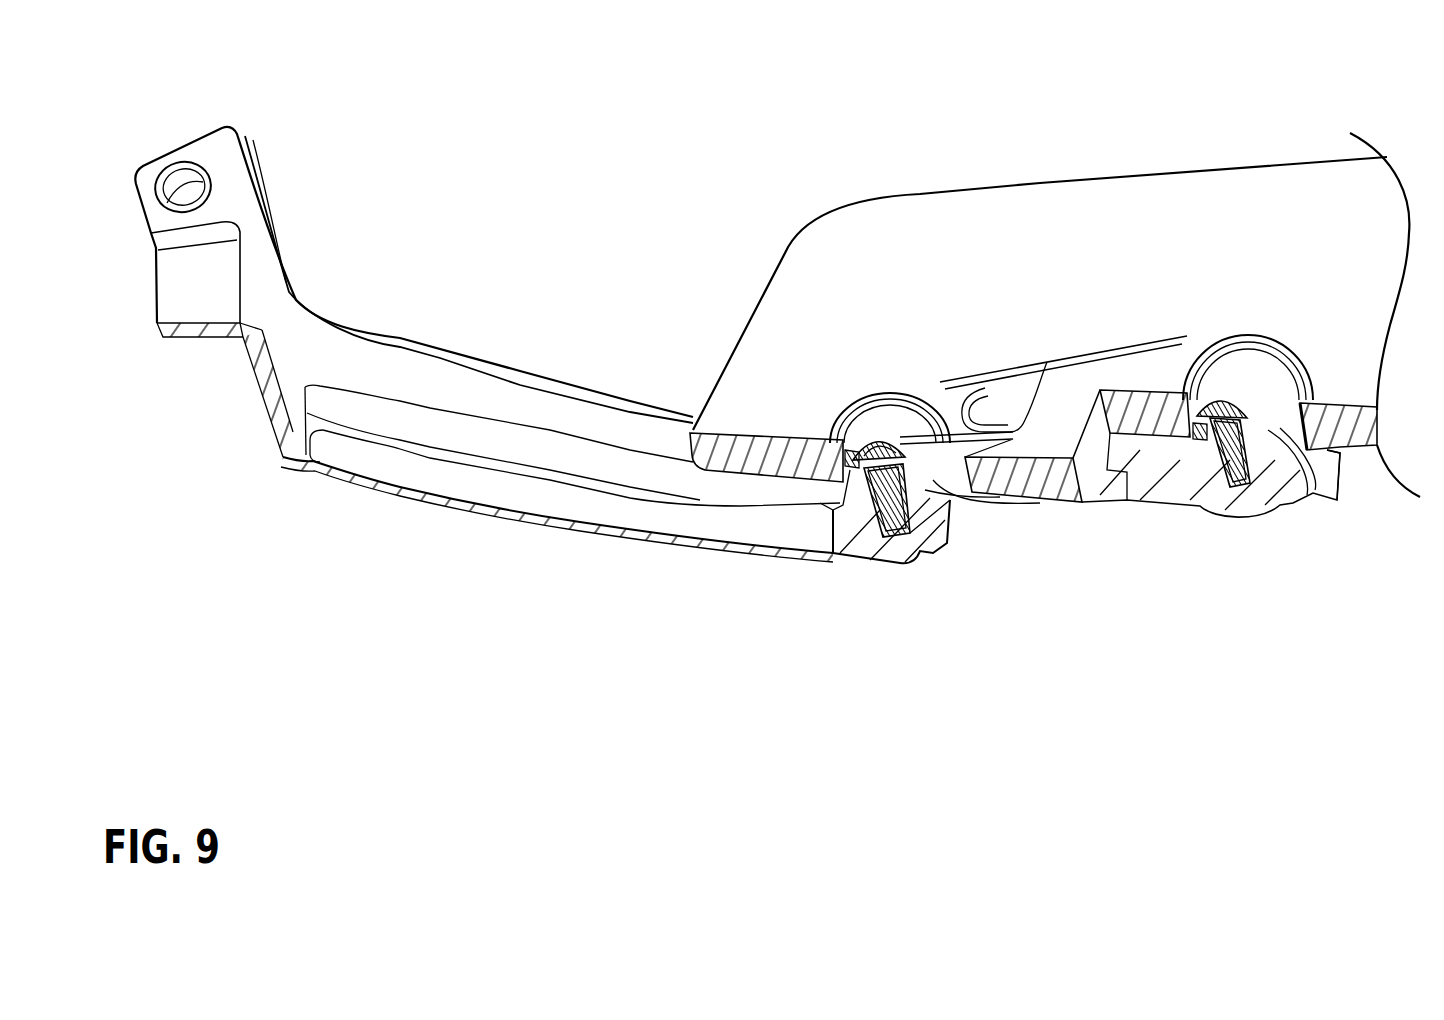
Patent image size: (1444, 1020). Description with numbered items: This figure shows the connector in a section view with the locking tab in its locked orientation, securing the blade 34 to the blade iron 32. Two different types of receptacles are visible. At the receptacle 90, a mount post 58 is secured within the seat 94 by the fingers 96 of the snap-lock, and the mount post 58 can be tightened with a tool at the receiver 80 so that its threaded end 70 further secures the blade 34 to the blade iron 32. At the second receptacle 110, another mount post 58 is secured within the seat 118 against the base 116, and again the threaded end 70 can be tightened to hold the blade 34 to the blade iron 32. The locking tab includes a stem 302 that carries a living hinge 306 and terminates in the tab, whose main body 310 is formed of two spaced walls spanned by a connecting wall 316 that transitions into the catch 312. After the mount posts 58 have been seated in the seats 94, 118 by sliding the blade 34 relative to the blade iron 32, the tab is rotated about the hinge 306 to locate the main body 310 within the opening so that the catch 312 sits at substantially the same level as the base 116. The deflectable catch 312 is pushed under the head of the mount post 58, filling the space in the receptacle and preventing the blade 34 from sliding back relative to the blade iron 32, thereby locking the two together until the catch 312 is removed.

The blade iron 32 is at (426, 340).
The blade 34 is at (922, 195).
The mount post 58 is at (880, 536).
The threaded end 70 is at (900, 533).
The receiver 80 is at (1190, 392).
The receptacle 90 is at (1222, 372).
The seat 94 is at (1332, 503).
The fingers 96 is at (1258, 392).
The second receptacle 110 is at (862, 422).
The base 116 is at (866, 423).
The seat 118 is at (843, 503).
The stem 302 is at (990, 427).
The first hinge 306 is at (1020, 440).
The main body 310 is at (900, 440).
The catch 312 is at (905, 540).
The connecting wall 316 is at (980, 500).